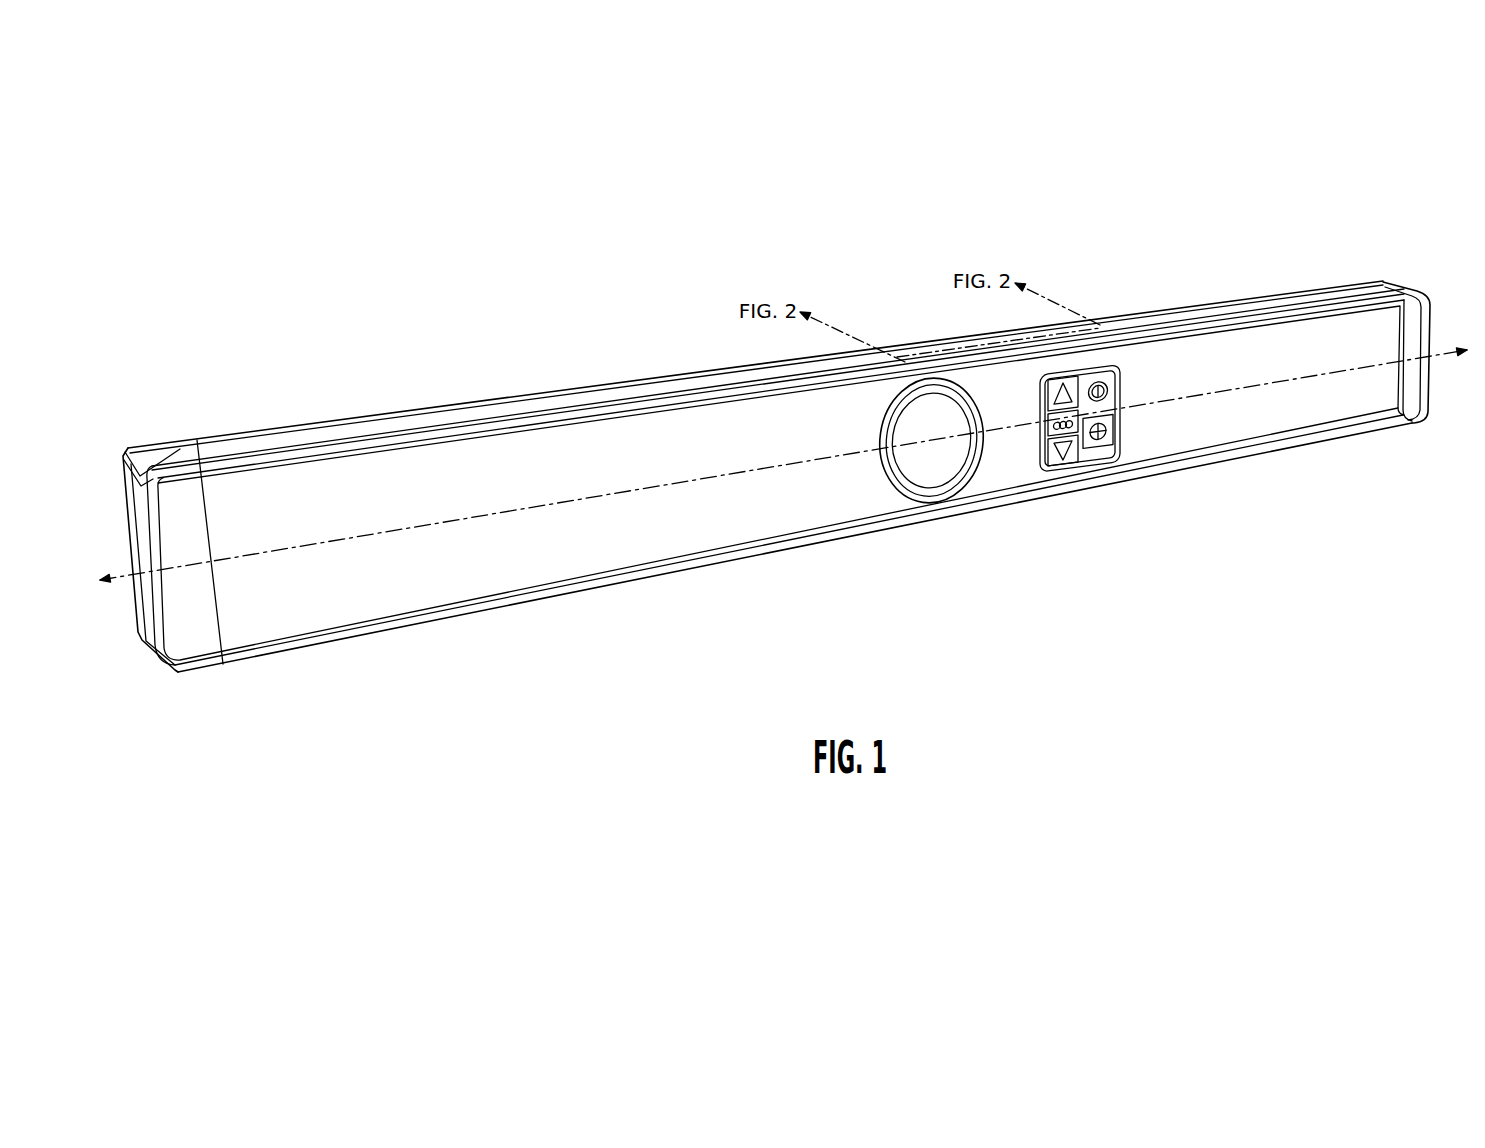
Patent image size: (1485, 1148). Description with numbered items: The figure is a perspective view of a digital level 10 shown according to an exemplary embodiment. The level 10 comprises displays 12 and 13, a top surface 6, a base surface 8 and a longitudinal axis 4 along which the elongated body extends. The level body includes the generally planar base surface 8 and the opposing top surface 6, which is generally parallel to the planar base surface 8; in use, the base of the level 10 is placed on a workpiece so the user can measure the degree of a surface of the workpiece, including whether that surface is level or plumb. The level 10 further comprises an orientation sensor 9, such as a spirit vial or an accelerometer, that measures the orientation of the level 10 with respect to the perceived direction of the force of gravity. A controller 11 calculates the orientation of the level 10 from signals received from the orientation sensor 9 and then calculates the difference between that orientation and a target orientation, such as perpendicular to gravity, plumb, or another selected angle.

The longitudinal axis 4 is at (1445, 343).
The top surface 6 is at (317, 427).
The base surface 8 is at (268, 668).
The orientation sensor 9 is at (457, 477).
The digital level 10 is at (532, 301).
The controller 11 is at (1118, 360).
The display 12 is at (968, 490).
The display 13 is at (983, 331).